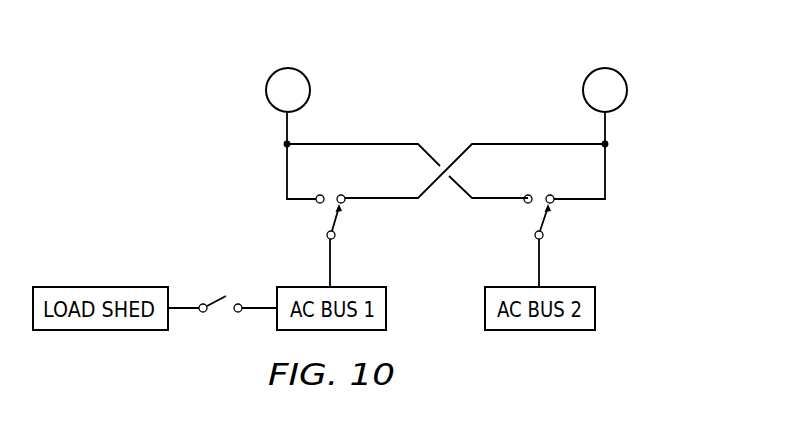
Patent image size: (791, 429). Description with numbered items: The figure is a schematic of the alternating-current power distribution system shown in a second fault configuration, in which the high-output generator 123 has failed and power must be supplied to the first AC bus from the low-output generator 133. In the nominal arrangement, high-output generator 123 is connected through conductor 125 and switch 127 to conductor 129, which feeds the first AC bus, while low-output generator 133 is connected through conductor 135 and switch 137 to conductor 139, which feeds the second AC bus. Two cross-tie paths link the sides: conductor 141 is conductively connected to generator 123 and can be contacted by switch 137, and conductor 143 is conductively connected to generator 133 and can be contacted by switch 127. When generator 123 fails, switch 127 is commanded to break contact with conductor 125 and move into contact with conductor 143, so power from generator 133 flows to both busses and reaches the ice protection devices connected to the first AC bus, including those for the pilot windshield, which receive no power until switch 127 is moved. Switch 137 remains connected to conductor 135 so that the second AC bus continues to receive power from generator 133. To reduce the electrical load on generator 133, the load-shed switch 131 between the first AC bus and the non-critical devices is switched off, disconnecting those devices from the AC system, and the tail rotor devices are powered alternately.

The high-output generator 123 is at (266, 93).
The conductor 125 is at (285, 178).
The switch 127 is at (335, 221).
The conductor 129 is at (329, 255).
The load-shed switch 131 is at (221, 298).
The low-output generator 133 is at (628, 93).
The conductor 135 is at (607, 178).
The switch 137 is at (545, 221).
The conductor 139 is at (538, 255).
The conductor 141 is at (371, 143).
The conductor 143 is at (519, 143).